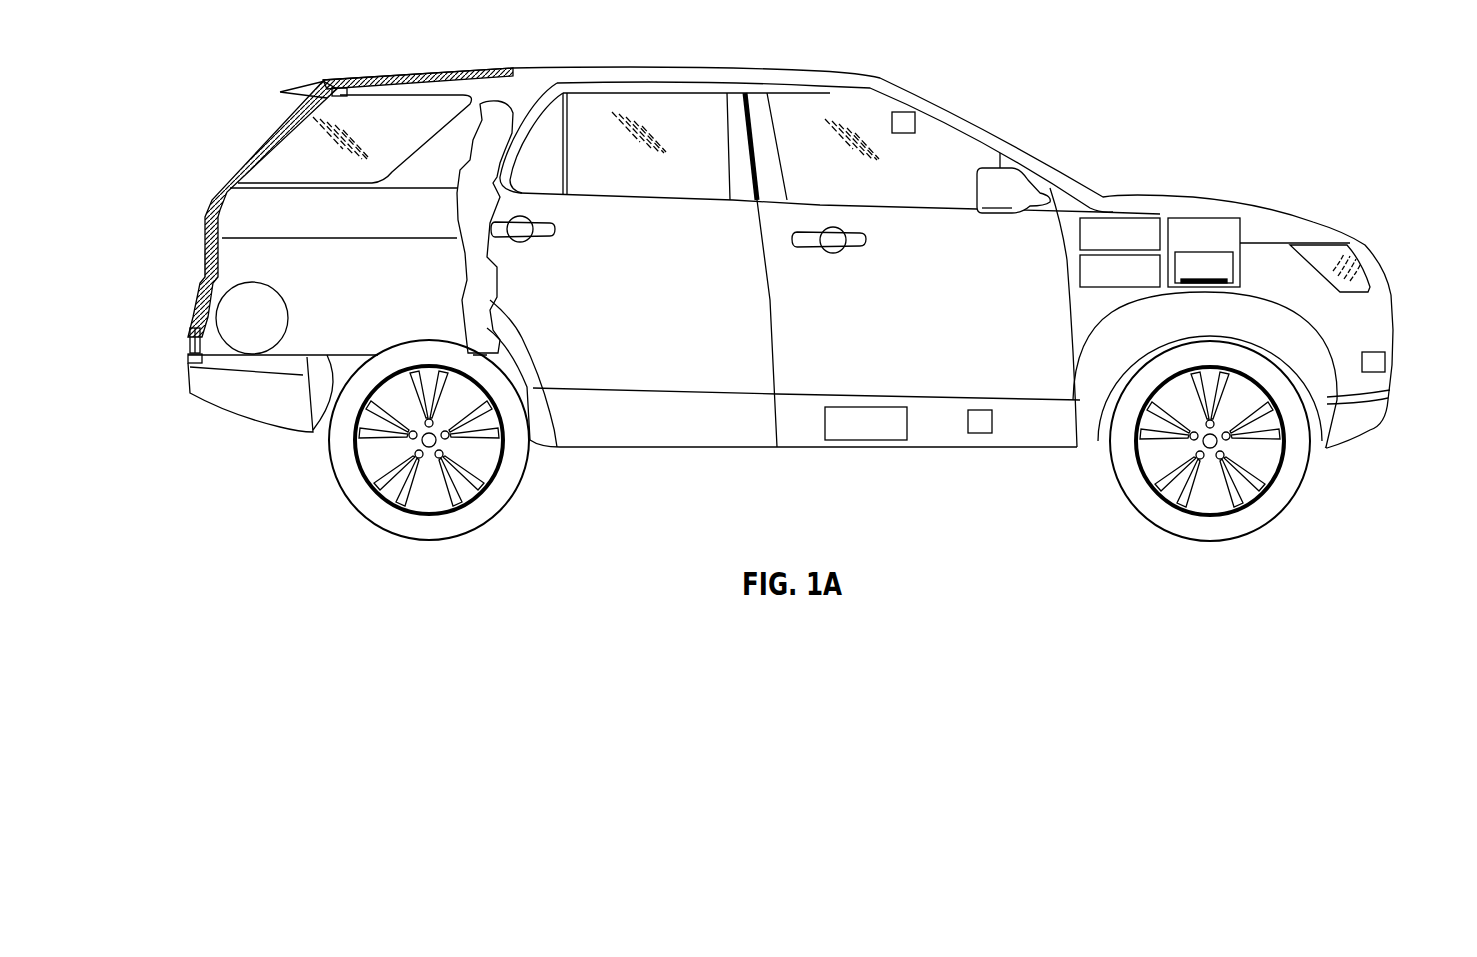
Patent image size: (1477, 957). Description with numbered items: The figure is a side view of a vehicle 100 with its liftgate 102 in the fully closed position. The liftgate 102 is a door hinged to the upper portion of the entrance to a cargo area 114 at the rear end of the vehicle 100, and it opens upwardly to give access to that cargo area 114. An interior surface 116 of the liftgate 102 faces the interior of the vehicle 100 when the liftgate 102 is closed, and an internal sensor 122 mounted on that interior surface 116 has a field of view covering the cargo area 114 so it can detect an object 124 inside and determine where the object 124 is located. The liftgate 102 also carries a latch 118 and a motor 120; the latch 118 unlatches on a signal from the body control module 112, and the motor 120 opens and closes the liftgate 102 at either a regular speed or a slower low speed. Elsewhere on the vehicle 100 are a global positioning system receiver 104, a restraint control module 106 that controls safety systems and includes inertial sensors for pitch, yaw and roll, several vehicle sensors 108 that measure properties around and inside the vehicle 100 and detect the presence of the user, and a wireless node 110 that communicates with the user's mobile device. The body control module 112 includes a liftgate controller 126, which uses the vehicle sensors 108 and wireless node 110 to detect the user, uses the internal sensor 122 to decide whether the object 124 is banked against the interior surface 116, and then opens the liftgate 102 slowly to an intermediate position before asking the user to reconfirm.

The vehicle 100 is at (1300, 212).
The liftgate 102 is at (208, 215).
The global positioning system (GPS) receiver 104 is at (1140, 218).
The restraint control module 106 is at (865, 441).
The vehicle sensors 108 is at (915, 122).
The wireless node 110 is at (1077, 270).
The body control module 112 is at (1205, 217).
The cargo area 114 is at (347, 330).
The interior surface 116 is at (223, 277).
The latch 118 is at (190, 366).
The motor 120 is at (342, 87).
The internal sensor 122 is at (190, 340).
The object 124 is at (288, 318).
The liftgate controller 126 is at (1204, 267).